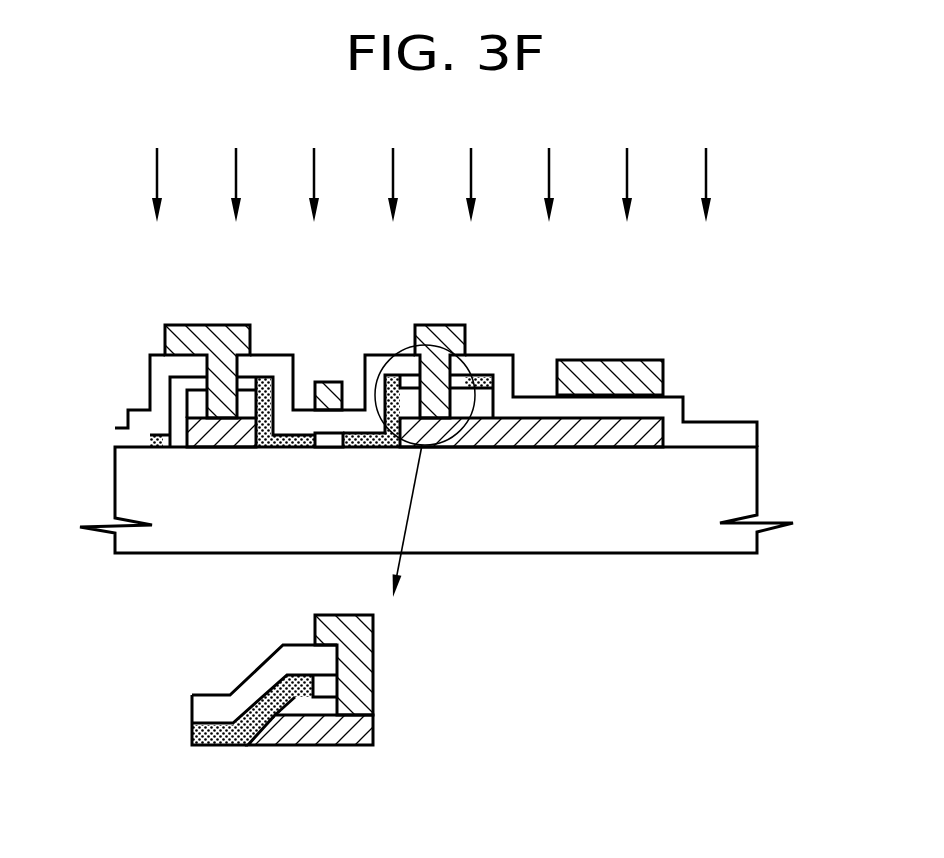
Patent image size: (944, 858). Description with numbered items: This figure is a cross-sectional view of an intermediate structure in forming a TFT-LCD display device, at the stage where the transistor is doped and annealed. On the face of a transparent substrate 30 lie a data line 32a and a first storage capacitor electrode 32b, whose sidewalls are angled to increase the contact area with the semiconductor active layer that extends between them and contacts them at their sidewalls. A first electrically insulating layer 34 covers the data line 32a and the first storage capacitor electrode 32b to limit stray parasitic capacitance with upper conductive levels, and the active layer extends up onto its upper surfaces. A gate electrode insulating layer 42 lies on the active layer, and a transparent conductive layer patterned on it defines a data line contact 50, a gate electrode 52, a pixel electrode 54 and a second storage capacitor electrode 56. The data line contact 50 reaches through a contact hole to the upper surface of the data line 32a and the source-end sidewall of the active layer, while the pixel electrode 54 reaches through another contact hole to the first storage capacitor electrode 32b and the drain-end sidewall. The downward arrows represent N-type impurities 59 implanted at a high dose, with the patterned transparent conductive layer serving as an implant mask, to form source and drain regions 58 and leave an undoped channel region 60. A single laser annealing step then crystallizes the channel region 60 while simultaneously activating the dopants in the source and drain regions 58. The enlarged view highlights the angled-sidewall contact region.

The transparent substrate 30 is at (742, 488).
The data line 32a is at (221, 447).
The first storage capacitor electrode 32b is at (526, 447).
The first electrically insulating layer 34 is at (471, 447).
The gate electrode insulating layer 42 is at (130, 438).
The data line contact 50 is at (212, 340).
The gate electrode 52 is at (326, 382).
The pixel electrode 54 is at (434, 340).
The second storage capacitor electrode 56 is at (650, 384).
The source and drain regions 58 is at (488, 377).
The N-type impurities 59 is at (708, 178).
The channel region 60 is at (329, 447).